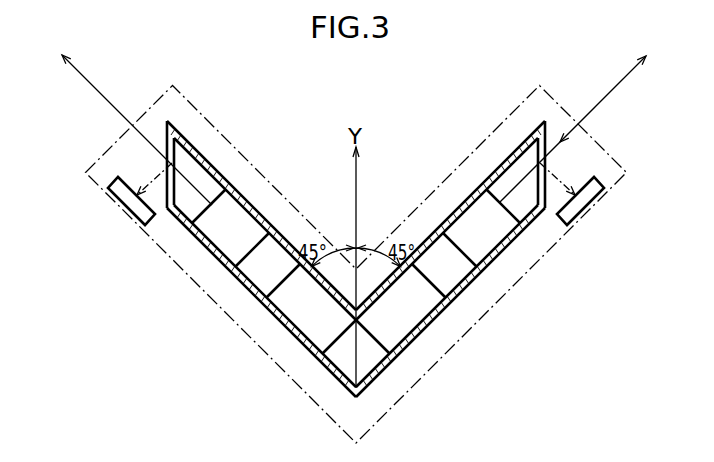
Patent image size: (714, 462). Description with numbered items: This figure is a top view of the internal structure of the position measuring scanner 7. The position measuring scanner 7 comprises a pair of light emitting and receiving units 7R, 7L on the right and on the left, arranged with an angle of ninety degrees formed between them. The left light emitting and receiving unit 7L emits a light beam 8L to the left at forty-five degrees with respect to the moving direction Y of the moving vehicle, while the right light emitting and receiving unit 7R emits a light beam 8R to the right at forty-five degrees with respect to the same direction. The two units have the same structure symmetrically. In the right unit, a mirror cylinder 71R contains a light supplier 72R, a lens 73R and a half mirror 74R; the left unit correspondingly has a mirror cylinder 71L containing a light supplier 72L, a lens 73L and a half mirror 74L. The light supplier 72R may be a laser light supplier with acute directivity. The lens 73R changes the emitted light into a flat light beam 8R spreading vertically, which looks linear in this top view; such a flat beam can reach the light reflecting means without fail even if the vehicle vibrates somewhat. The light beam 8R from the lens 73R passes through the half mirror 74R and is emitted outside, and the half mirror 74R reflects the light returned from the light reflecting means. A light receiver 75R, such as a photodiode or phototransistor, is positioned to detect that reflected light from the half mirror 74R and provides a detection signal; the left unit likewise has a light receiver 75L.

The position measuring scanner 7 is at (246, 153).
The light emitting and receiving unit 7L is at (237, 244).
The light emitting and receiving unit 7R is at (473, 239).
The mirror cylinder 71L is at (298, 253).
The mirror cylinder 71R is at (412, 247).
The light supplier 72L is at (288, 313).
The light supplier 72R is at (424, 313).
The lens 73L is at (216, 238).
The lens 73R is at (496, 238).
The half mirror 74L is at (170, 140).
The half mirror 74R is at (543, 140).
The light receiver 75L is at (133, 205).
The light receiver 75R is at (580, 205).
The light beam 8L is at (88, 82).
The light beam 8R is at (608, 94).